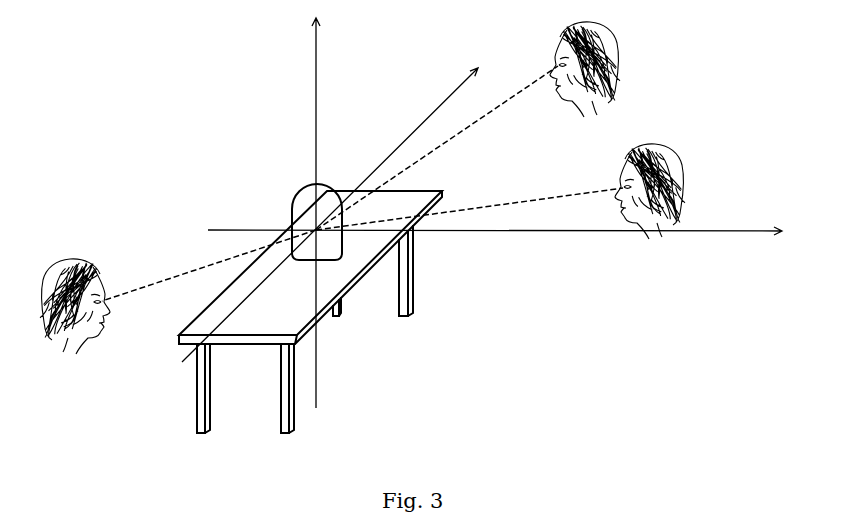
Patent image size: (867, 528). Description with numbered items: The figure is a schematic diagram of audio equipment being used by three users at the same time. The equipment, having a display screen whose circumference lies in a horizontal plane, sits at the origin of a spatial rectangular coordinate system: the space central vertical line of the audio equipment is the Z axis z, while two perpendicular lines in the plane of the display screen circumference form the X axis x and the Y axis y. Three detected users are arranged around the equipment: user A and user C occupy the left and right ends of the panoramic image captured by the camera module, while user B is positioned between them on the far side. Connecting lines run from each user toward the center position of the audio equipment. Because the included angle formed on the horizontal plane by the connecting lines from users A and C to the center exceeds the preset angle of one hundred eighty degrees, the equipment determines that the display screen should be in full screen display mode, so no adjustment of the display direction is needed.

The user A is at (514, 191).
The user B is at (480, 126).
The user C is at (178, 292).
The X axis x is at (495, 245).
The Y axis y is at (337, 215).
The Z axis z is at (325, 213).